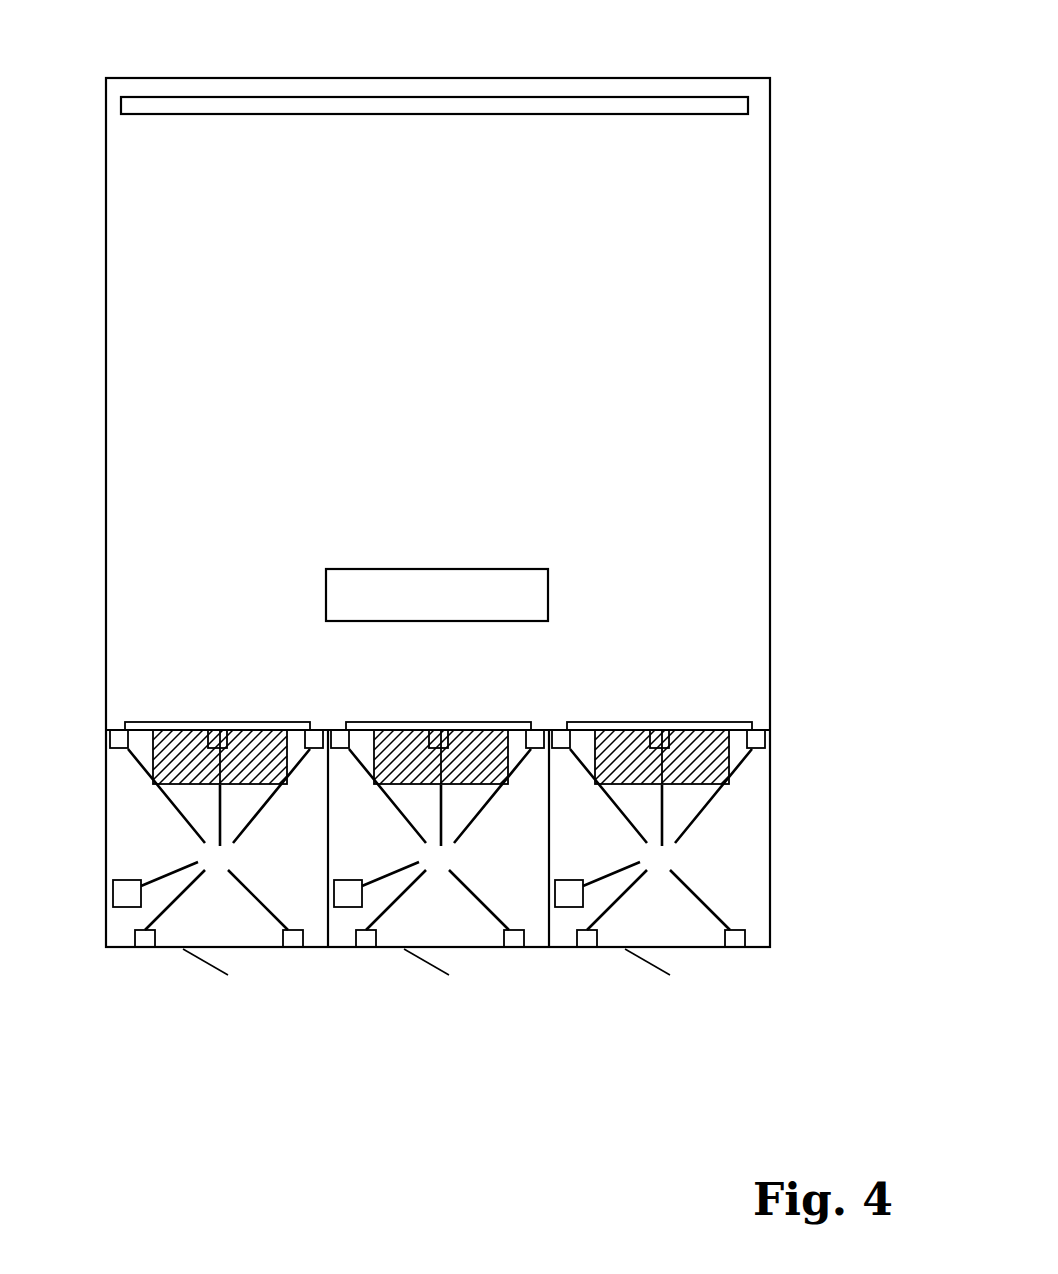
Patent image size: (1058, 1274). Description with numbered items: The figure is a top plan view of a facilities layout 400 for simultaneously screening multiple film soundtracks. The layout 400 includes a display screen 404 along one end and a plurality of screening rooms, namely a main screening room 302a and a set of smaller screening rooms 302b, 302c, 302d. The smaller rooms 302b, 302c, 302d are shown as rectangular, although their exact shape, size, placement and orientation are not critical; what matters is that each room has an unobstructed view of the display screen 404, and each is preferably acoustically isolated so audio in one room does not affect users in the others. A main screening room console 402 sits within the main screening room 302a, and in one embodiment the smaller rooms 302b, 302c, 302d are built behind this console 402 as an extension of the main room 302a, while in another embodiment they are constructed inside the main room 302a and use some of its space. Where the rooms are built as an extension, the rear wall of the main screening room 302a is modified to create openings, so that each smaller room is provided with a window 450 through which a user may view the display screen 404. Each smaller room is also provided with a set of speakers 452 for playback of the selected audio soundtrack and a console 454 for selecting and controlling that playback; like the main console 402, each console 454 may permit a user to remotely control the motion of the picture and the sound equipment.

The facilities layout 400 is at (823, 33).
The display screen 404 is at (748, 105).
The main screening room console 402 is at (548, 580).
The main screening room 302a is at (738, 691).
The screening room 302b is at (263, 948).
The screening room 302c is at (484, 948).
The screening room 302d is at (705, 948).
The window 450 is at (565, 712).
The set of speakers 452 is at (432, 839).
The console 454 is at (155, 766).